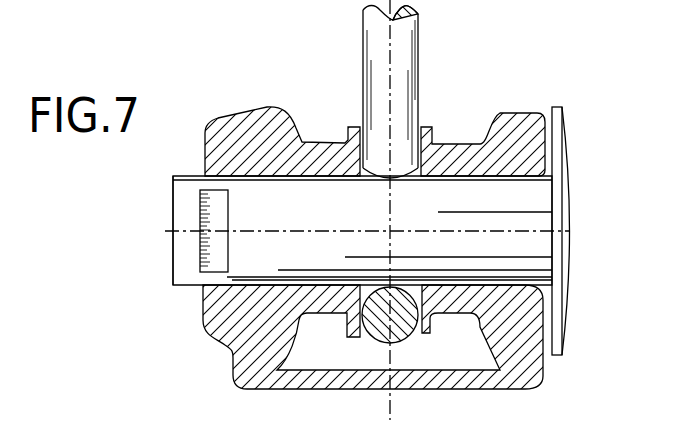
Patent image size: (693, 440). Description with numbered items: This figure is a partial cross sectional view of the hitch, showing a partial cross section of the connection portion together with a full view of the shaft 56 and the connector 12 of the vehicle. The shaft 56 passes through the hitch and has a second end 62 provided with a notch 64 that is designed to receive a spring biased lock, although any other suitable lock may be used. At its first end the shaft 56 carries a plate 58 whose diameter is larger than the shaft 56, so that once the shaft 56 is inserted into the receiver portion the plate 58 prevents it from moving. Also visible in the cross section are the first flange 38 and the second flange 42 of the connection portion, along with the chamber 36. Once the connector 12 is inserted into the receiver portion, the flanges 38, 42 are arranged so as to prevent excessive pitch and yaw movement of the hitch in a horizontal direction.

The connector 12 is at (405, 61).
The chamber 36 is at (452, 368).
The first flange 38 is at (428, 127).
The second flange 42 is at (355, 127).
The shaft 56 is at (327, 224).
The plate 58 is at (567, 202).
The second end 62 is at (173, 248).
The notch 64 is at (195, 276).